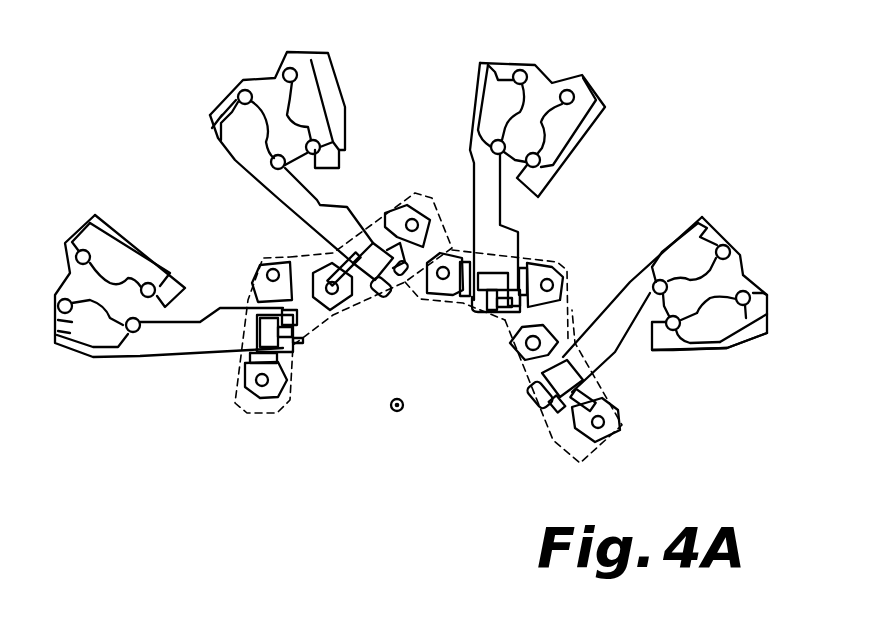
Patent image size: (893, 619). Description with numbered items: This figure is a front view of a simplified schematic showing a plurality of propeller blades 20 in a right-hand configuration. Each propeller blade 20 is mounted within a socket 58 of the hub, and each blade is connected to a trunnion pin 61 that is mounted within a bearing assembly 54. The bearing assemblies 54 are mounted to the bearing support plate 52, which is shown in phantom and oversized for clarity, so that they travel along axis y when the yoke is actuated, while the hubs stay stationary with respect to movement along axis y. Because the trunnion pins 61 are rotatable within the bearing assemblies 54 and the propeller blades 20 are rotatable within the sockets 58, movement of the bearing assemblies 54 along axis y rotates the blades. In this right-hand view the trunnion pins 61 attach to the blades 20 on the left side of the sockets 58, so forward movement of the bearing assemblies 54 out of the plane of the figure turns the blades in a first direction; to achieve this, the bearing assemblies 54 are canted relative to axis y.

The propeller blade 20 is at (562, 137).
The bearing support plate 52 is at (225, 405).
The bearing assembly 54 is at (518, 360).
The socket 58 is at (720, 348).
The trunnion pin 61 is at (595, 353).
The axis Y y is at (388, 405).